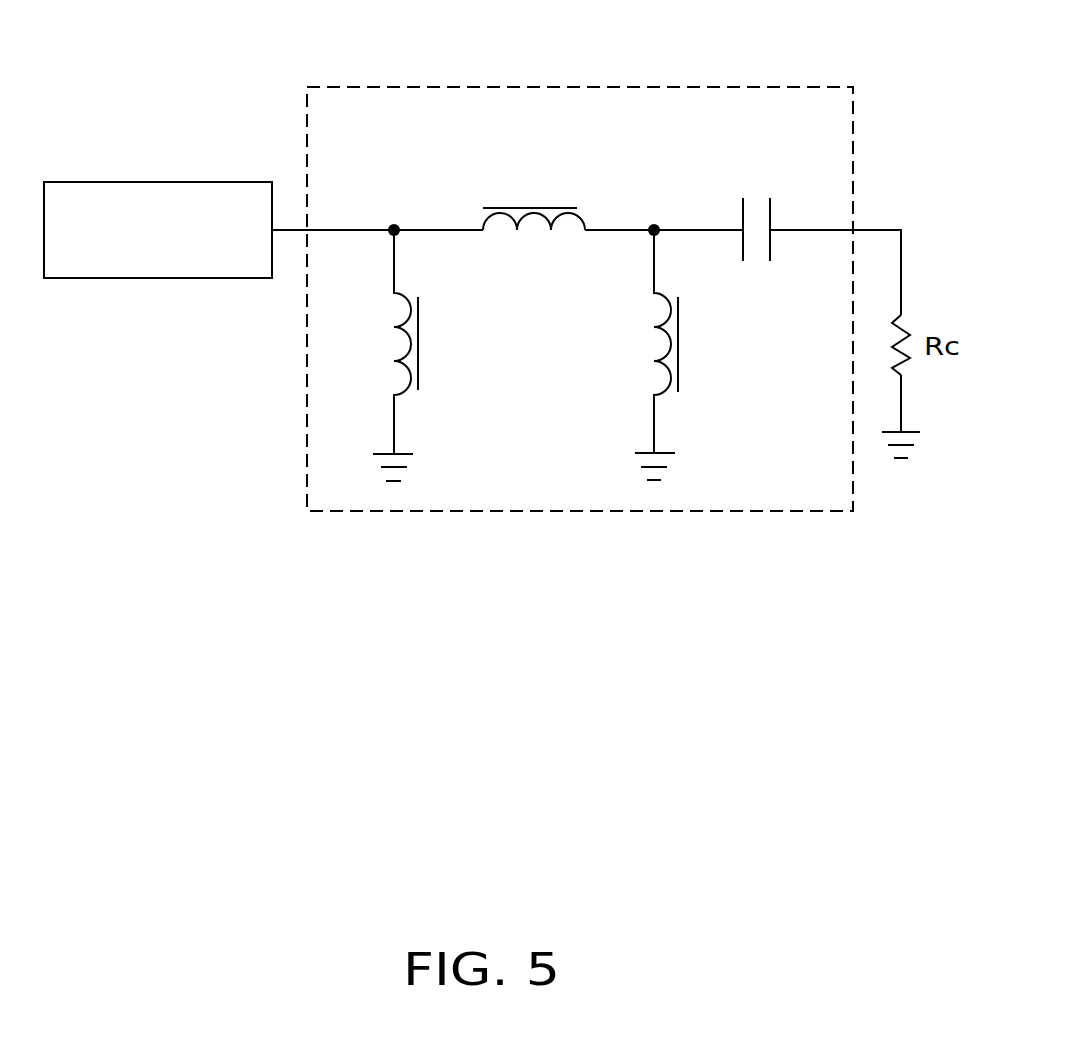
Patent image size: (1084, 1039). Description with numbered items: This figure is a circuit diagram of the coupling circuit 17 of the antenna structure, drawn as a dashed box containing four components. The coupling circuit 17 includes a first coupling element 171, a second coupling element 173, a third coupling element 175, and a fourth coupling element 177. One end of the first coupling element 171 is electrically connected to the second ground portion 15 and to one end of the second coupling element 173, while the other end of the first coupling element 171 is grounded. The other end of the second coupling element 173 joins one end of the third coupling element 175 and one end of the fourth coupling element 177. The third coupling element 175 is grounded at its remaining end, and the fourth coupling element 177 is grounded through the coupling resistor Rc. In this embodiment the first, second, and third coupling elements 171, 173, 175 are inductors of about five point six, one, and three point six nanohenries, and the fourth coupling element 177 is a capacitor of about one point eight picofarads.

The second ground portion 15 is at (196, 182).
The coupling circuit 17 is at (580, 87).
The first coupling element 171 is at (397, 370).
The second coupling element 173 is at (555, 224).
The third coupling element 175 is at (660, 373).
The fourth coupling element 177 is at (770, 212).